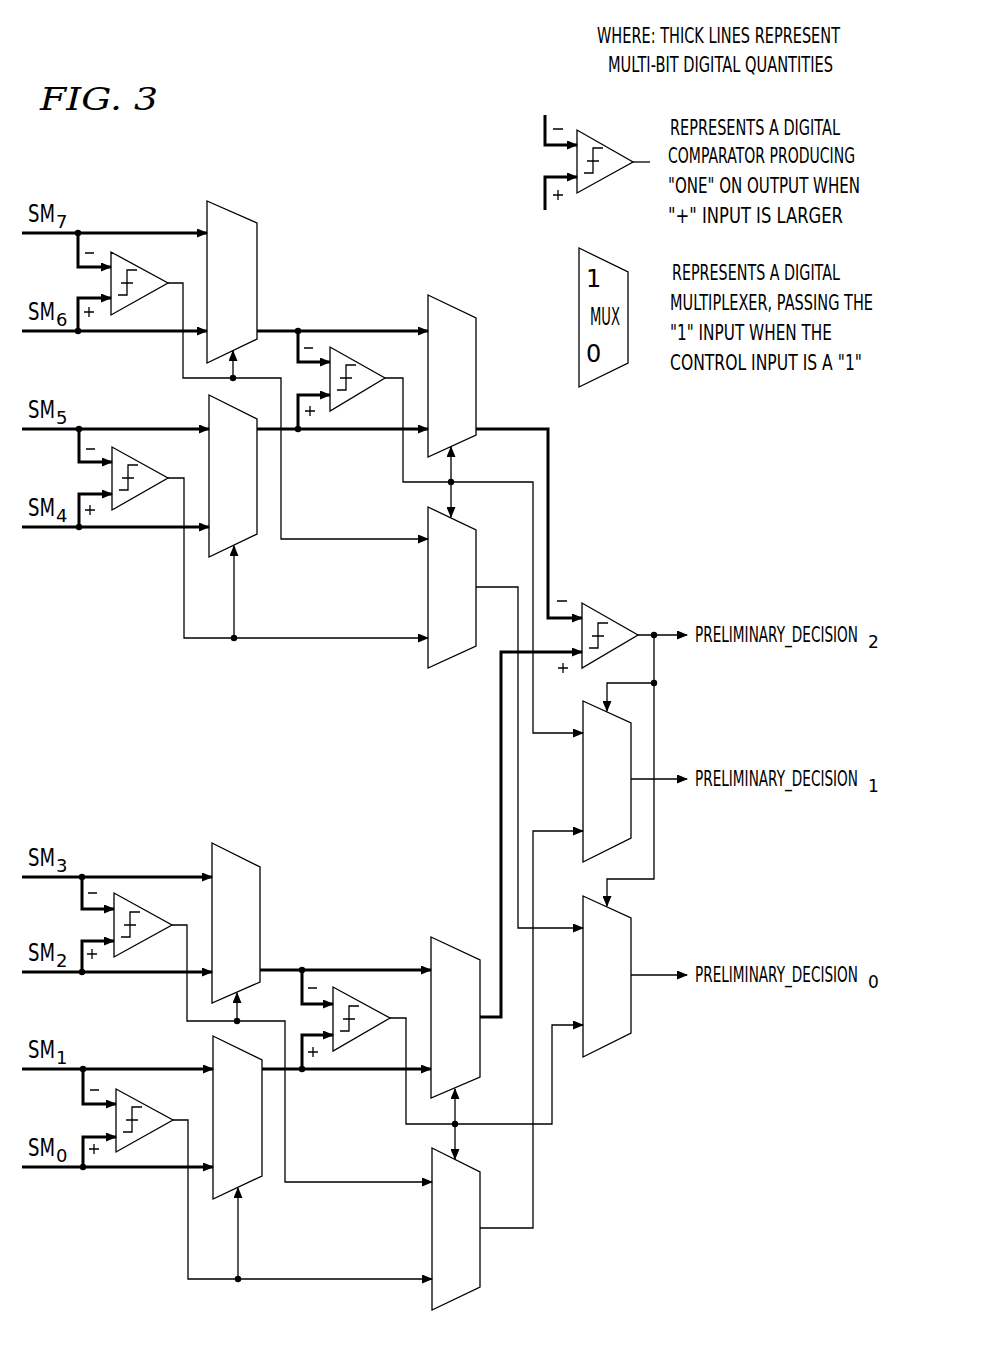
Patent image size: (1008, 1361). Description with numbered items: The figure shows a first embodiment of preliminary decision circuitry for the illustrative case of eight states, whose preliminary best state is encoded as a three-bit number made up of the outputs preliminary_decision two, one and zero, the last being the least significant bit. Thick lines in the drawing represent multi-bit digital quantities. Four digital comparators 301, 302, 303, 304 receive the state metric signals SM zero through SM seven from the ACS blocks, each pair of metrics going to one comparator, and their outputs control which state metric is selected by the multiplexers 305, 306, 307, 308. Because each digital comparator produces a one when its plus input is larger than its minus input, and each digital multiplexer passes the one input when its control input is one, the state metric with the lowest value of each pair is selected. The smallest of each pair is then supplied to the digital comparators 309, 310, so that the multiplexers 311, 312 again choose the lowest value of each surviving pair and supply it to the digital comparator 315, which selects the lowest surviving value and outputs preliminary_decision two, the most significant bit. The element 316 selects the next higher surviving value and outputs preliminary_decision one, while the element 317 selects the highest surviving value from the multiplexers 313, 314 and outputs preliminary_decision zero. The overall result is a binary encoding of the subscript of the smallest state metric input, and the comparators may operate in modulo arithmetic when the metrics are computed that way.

The digital comparator 301 is at (150, 1109).
The digital comparator 302 is at (148, 914).
The digital comparator 303 is at (146, 467).
The digital comparator 304 is at (145, 272).
The multiplexer 305 is at (247, 1185).
The multiplexer 306 is at (240, 853).
The multiplexer 307 is at (242, 541).
The multiplexer 308 is at (247, 212).
The digital comparator 309 is at (366, 1010).
The digital comparator 310 is at (364, 363).
The multiplexer 311 is at (460, 942).
The multiplexer 312 is at (458, 305).
The multiplexer 313 is at (482, 1265).
The multiplexer 314 is at (455, 664).
The digital comparator 315 is at (607, 607).
The digital comparator 316 is at (581, 781).
The digital comparator 317 is at (610, 1055).